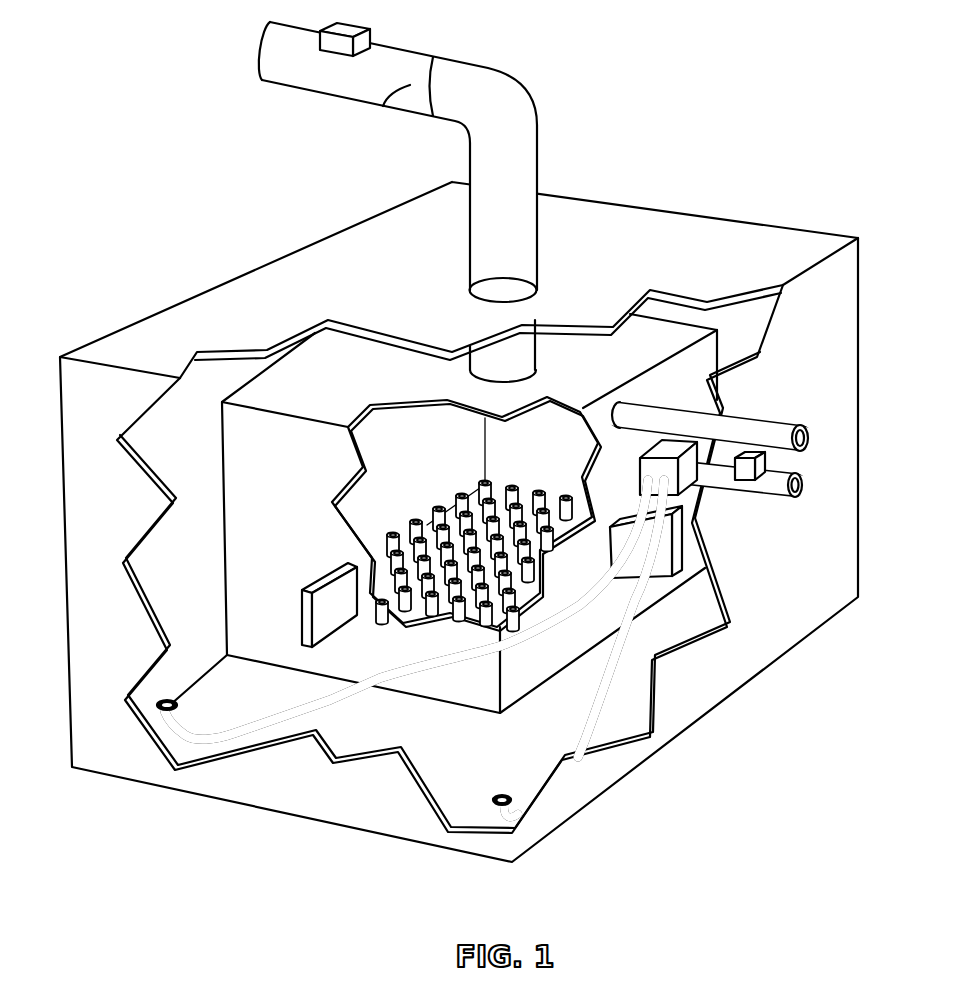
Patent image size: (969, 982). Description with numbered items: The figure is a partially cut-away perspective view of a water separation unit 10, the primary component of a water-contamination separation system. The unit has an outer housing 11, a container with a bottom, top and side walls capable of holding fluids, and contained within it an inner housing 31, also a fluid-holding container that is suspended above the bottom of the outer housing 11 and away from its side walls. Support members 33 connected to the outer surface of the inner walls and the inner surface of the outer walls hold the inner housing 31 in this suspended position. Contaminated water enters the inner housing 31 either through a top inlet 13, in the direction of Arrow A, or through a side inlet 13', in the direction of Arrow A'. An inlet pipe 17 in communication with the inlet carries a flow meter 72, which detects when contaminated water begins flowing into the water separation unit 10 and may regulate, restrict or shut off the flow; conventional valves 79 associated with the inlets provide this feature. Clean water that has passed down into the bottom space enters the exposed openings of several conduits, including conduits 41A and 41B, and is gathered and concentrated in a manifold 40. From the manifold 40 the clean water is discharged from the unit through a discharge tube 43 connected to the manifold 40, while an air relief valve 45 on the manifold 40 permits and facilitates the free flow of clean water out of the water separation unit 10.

The water separation unit 10 is at (215, 195).
The outer housing 11 is at (101, 512).
The top inlet 13 is at (477, 309).
The side inlet 13' is at (679, 401).
The inlet pipe 17 is at (500, 93).
The inner housing 31 is at (253, 527).
The support member 33 is at (327, 602).
The manifold 40 is at (685, 487).
The conduit 41A is at (503, 792).
The conduit 41B is at (167, 700).
The discharge tube 43 is at (770, 487).
The air relief valve 45 is at (750, 455).
The flow meter 72 is at (337, 42).
The valve 79 is at (385, 108).
The direction of flow at top inlet A is at (566, 178).
The direction of flow at side inlet A' is at (853, 413).